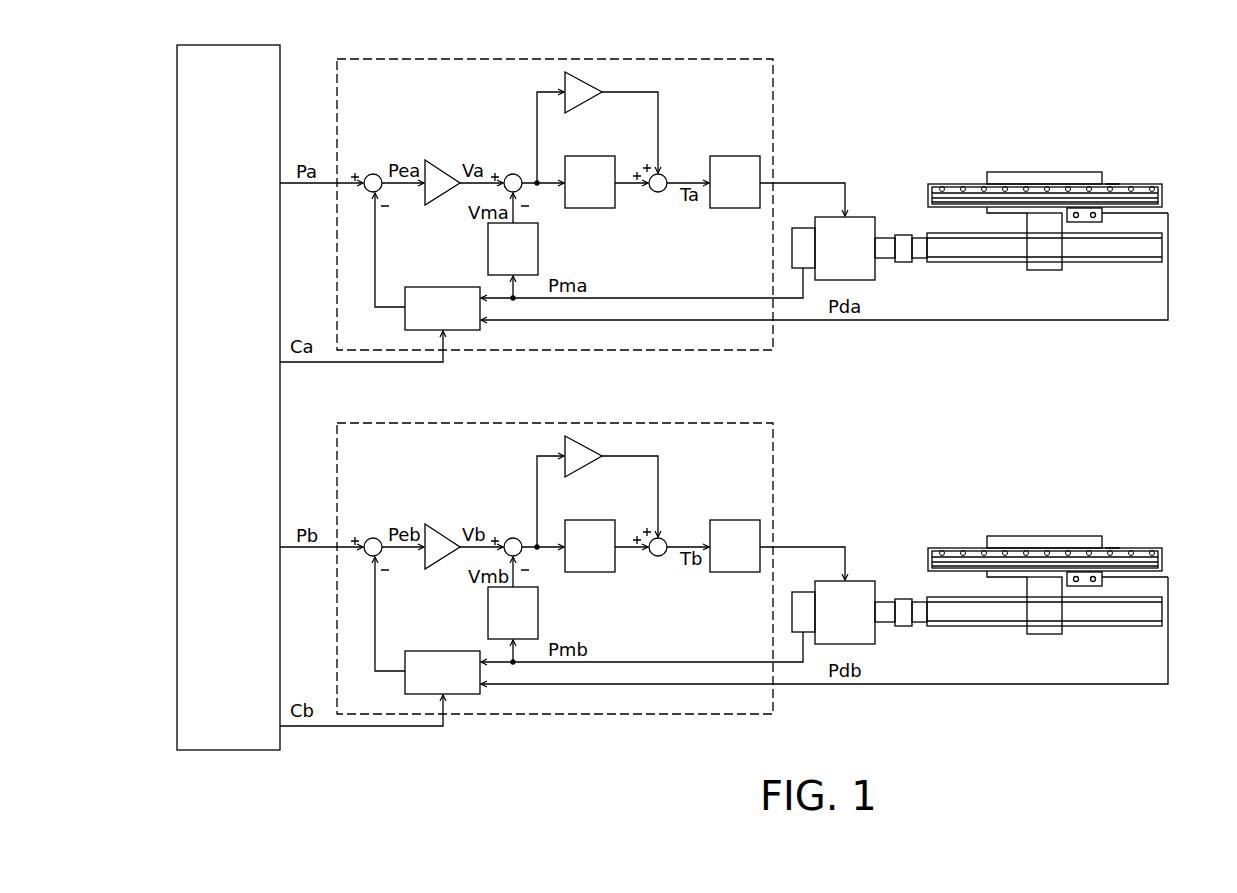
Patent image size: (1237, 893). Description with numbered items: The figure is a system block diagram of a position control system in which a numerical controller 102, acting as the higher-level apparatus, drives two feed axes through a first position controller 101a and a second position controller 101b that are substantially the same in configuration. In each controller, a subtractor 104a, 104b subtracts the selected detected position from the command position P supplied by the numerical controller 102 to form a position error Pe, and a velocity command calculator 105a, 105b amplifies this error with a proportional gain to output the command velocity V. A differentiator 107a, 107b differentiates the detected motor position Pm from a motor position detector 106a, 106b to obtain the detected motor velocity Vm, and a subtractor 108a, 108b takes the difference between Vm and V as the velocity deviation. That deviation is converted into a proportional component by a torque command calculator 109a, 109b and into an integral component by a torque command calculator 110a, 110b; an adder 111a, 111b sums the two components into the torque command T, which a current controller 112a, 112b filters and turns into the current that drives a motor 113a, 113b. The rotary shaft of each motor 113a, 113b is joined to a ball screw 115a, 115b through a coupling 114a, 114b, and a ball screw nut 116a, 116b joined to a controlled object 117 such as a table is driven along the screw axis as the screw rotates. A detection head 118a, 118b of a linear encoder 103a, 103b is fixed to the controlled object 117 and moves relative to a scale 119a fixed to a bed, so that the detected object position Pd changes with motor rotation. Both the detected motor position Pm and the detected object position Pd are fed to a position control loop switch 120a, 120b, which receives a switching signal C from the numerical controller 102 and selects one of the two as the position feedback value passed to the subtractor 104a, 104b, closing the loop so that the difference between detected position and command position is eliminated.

The first position controller 101a is at (751, 58).
The second position controller 101b is at (555, 594).
The numerical controller 102 is at (228, 397).
The linear encoder 103a is at (1125, 186).
The linear encoder 103b is at (1068, 540).
The subtractor 104a is at (373, 174).
The subtractor 104b is at (375, 472).
The velocity command calculator 105a is at (428, 160).
The velocity command calculator 105b is at (457, 471).
The motor position detector 106a is at (795, 228).
The motor position detector 106b is at (846, 521).
The differentiator 107a is at (513, 249).
The differentiator 107b is at (513, 613).
The subtractor 108a is at (513, 174).
The subtractor 108b is at (517, 484).
The torque command calculator (velocity loop proportional gain) 109a is at (590, 182).
The torque command calculator (velocity loop proportional gain) 109b is at (590, 546).
The torque command calculator (velocity loop integral gain) 110a is at (578, 75).
The torque command calculator (velocity loop integral gain) 110b is at (593, 426).
The adder 111a is at (667, 180).
The adder 111b is at (684, 470).
The current controller 112a is at (735, 182).
The current controller 112b is at (735, 546).
The motor 113a is at (845, 248).
The motor 113b is at (845, 612).
The coupling 114a is at (903, 235).
The coupling 114b is at (892, 553).
The ball screw 115a is at (965, 262).
The ball screw 115b is at (1044, 640).
The ball screw nut 116a is at (1050, 270).
The ball screw nut 116b is at (1086, 630).
The controlled object 117 is at (1040, 172).
The detection head 118a is at (1090, 222).
The detection head 118b is at (1148, 579).
The scale 119a is at (1112, 184).
The first position control loop switch 120a is at (442, 308).
The second position control loop switch 120b is at (442, 672).